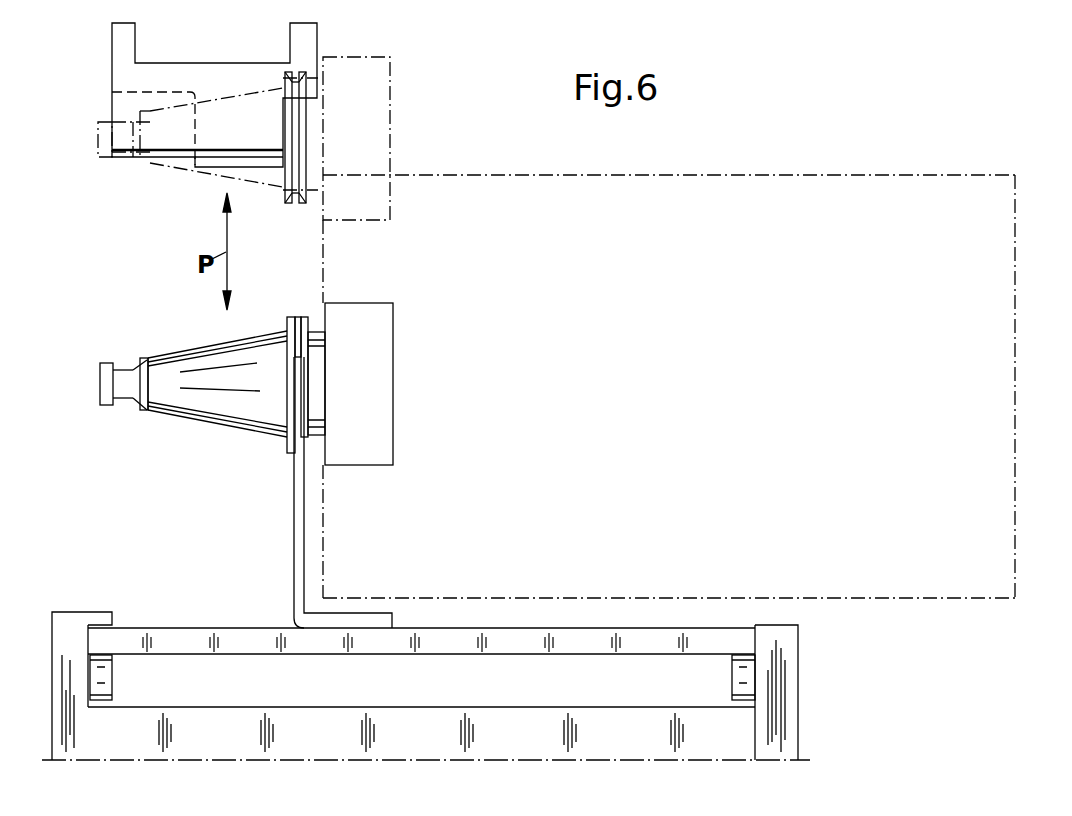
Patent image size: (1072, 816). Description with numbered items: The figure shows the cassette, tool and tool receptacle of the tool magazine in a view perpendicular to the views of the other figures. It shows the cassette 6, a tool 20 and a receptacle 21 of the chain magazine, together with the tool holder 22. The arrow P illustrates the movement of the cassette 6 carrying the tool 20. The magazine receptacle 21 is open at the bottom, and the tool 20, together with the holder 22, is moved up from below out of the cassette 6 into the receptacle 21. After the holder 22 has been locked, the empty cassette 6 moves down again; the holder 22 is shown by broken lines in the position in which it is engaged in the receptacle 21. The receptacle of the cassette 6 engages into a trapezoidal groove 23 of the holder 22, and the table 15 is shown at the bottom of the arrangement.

The cassette 6 is at (298, 547).
The table 15 is at (778, 722).
The tool 20 is at (1002, 412).
The receptacle 21 is at (113, 55).
The tool holder 22 is at (175, 160).
The trapezoidal groove 23 is at (296, 205).